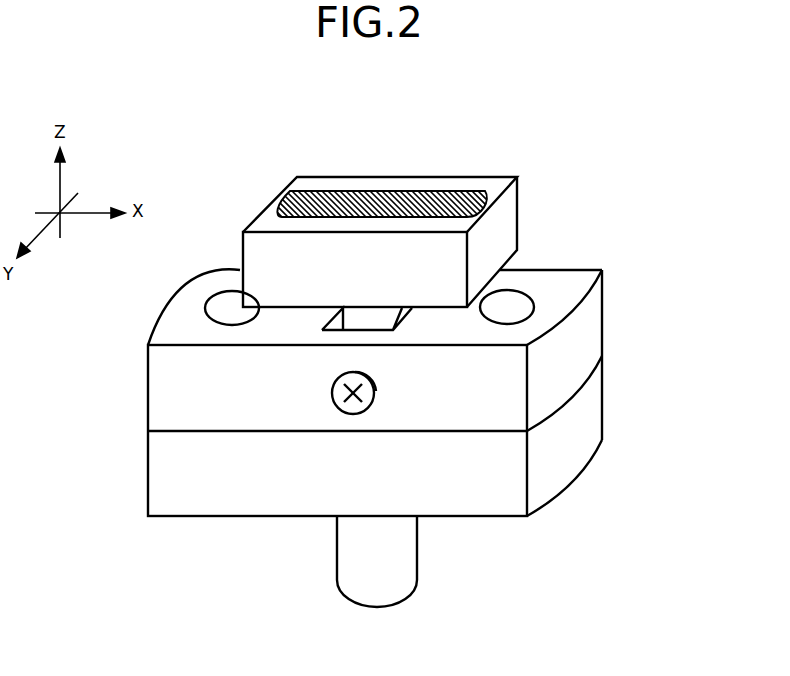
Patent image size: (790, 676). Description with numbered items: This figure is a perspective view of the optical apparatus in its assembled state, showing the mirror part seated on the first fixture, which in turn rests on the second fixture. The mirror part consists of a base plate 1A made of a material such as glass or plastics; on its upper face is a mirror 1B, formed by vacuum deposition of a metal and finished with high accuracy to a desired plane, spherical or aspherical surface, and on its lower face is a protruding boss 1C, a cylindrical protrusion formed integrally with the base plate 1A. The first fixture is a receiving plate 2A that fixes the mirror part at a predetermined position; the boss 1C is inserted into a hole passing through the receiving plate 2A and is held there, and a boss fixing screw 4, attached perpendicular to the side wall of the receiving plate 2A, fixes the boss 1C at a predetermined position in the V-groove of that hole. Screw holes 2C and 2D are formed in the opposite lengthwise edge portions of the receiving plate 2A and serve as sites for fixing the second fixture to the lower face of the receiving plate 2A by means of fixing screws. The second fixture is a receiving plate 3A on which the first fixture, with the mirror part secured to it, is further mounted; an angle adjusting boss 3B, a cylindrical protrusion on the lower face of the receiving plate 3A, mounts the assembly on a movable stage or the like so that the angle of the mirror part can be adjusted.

The base plate 1A is at (518, 220).
The mirror 1B is at (320, 197).
The boss 1C is at (357, 318).
The receiving plate 2A is at (603, 318).
The screw hole 2C is at (233, 295).
The screw hole 2D is at (507, 300).
The receiving plate 3A is at (602, 395).
The angle adjusting boss 3B is at (417, 557).
The boss fixing screw 4 is at (331, 396).